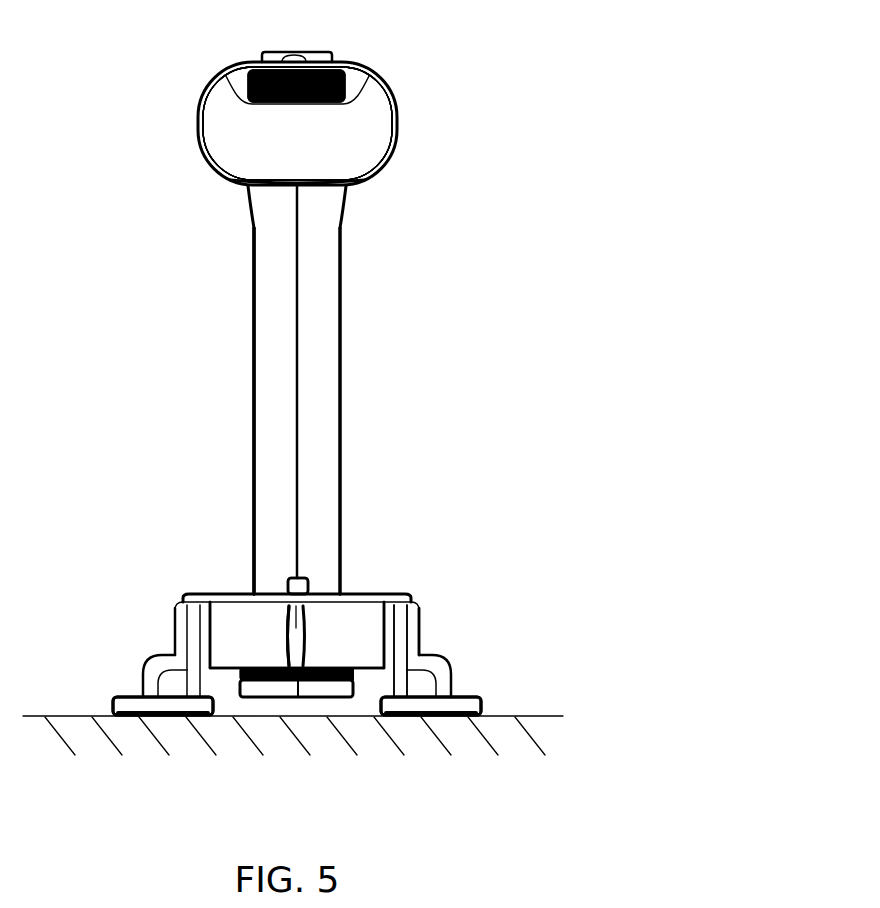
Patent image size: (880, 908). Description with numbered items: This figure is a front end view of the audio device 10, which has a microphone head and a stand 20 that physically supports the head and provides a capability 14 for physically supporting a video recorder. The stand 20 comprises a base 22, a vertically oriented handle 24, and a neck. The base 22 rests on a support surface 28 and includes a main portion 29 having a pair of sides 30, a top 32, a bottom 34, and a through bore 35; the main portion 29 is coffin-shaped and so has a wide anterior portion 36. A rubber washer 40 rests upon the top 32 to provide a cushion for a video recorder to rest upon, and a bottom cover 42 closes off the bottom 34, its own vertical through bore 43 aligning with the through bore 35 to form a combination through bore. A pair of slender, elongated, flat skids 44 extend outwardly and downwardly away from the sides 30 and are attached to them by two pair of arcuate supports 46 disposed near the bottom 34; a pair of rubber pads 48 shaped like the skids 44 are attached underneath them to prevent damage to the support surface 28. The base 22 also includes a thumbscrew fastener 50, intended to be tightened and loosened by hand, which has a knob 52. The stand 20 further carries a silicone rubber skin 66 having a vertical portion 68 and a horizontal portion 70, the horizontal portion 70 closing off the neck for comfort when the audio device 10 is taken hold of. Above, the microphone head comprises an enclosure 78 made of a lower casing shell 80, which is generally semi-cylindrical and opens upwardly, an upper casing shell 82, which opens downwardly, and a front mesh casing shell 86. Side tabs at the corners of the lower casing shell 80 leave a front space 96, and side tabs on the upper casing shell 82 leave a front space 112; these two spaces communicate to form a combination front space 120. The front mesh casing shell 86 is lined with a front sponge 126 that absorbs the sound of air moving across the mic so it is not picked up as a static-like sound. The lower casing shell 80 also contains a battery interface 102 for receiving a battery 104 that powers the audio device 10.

The audio device 10 is at (92, 61).
The capability for physically supporting a video recorder 14 is at (268, 573).
The stand 20 is at (236, 312).
The base 22 is at (367, 610).
The handle 24 is at (252, 380).
The support surface 28 is at (226, 746).
The main portion 29 is at (225, 629).
The pair of sides 30 is at (175, 613).
The top 32 is at (213, 593).
The bottom 34 is at (370, 673).
The through bore 35 is at (287, 588).
The wide anterior portion 36 is at (420, 636).
The rubber washer 40 is at (323, 592).
The bottom cover 42 is at (362, 670).
The through bore 43 is at (310, 680).
The pair of skids 44 is at (118, 697).
The arcuate supports 46 is at (190, 684).
The pair of rubber pads 48 is at (162, 717).
The thumbscrew fastener 50 is at (295, 577).
The knob 52 is at (277, 686).
The silicone rubber skin 66 is at (272, 431).
The vertical portion 68 is at (334, 437).
The horizontal portion 70 is at (283, 198).
The enclosure 78 is at (205, 106).
The lower casing shell 80 is at (352, 185).
The upper casing shell 82 is at (373, 82).
The front mesh casing shell 86 is at (362, 128).
The front space 96 is at (222, 130).
The battery interface 102 is at (243, 152).
The battery 104 is at (243, 152).
The front space 112 is at (358, 145).
The combination front space 120 is at (272, 131).
The front sponge 126 is at (351, 131).